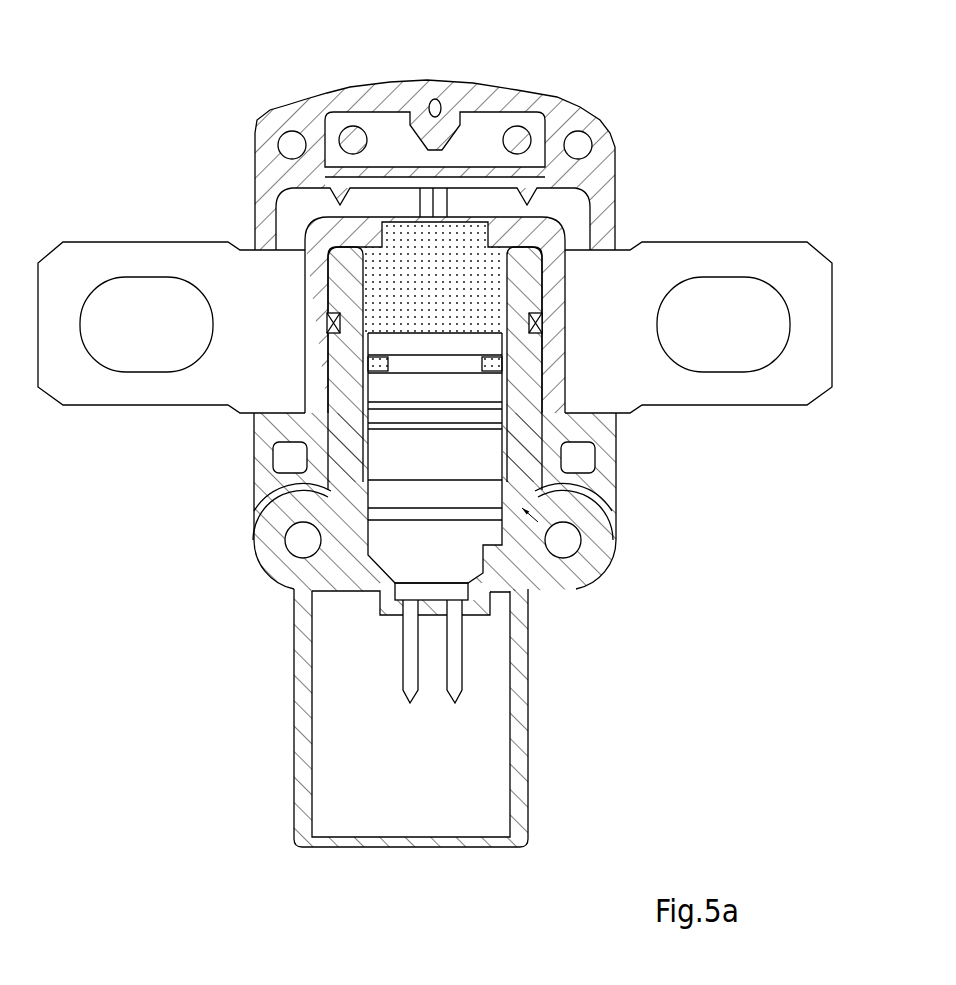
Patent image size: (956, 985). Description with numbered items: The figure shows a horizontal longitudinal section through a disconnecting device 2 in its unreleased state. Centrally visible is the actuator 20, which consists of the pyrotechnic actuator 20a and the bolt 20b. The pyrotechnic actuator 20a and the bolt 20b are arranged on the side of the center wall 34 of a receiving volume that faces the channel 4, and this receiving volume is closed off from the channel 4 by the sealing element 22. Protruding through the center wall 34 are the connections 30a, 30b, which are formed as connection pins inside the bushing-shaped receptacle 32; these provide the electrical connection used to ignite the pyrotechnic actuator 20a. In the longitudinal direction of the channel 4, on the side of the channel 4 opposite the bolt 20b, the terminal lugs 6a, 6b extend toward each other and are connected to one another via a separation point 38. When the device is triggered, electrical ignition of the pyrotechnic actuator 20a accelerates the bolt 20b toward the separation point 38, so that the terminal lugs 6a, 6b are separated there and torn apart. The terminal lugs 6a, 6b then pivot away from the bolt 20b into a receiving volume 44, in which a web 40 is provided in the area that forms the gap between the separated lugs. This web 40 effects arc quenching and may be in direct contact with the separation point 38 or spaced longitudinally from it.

The disconnecting device 2 is at (714, 87).
The channel 4 is at (467, 258).
The terminal lug 6a is at (100, 258).
The terminal lug 6b is at (765, 258).
The actuator 20 is at (565, 540).
The pyrotechnic actuator 20a is at (387, 543).
The bolt 20b is at (373, 387).
The sealing element 22 is at (373, 417).
The connection 30a is at (453, 703).
The connection 30b is at (410, 703).
The bushing-shaped receptacle 32 is at (408, 800).
The center wall 34 is at (407, 602).
The separation point 38 is at (414, 202).
The web 40 is at (437, 98).
The receiving volume 44 is at (342, 127).